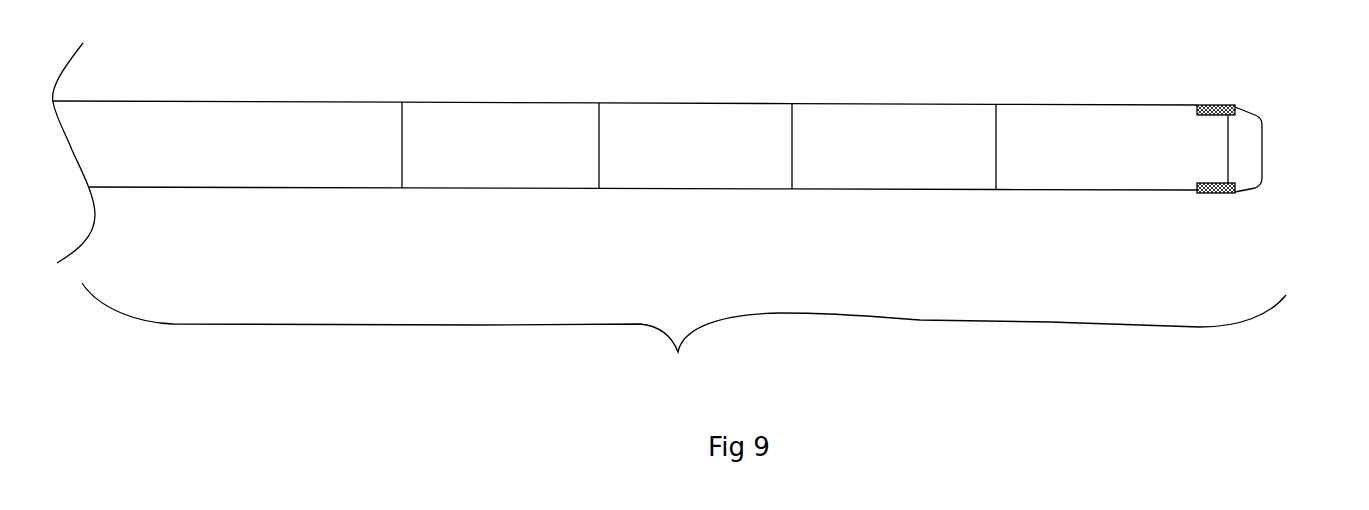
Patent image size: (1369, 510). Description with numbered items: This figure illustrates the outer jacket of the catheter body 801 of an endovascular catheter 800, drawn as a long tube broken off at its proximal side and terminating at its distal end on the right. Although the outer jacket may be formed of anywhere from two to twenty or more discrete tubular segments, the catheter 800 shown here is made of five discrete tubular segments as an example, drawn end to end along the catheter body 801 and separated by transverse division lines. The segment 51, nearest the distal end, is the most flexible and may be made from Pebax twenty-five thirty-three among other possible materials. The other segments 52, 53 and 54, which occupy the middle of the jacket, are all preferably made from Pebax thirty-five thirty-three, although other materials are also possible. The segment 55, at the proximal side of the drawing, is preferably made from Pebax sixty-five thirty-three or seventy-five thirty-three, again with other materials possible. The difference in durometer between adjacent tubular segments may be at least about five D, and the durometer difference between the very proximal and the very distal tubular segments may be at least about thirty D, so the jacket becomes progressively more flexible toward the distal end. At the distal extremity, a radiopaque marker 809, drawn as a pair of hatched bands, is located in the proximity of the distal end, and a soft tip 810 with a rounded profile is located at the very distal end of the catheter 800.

The endovascular catheter 800 is at (669, 211).
The catheter body 801 is at (822, 219).
The segment 51 is at (1120, 103).
The segment 52 is at (925, 102).
The segment 53 is at (725, 102).
The segment 54 is at (533, 101).
The segment 55 is at (272, 100).
The radiopaque marker 809 is at (1212, 104).
The soft tip 810 is at (1258, 112).